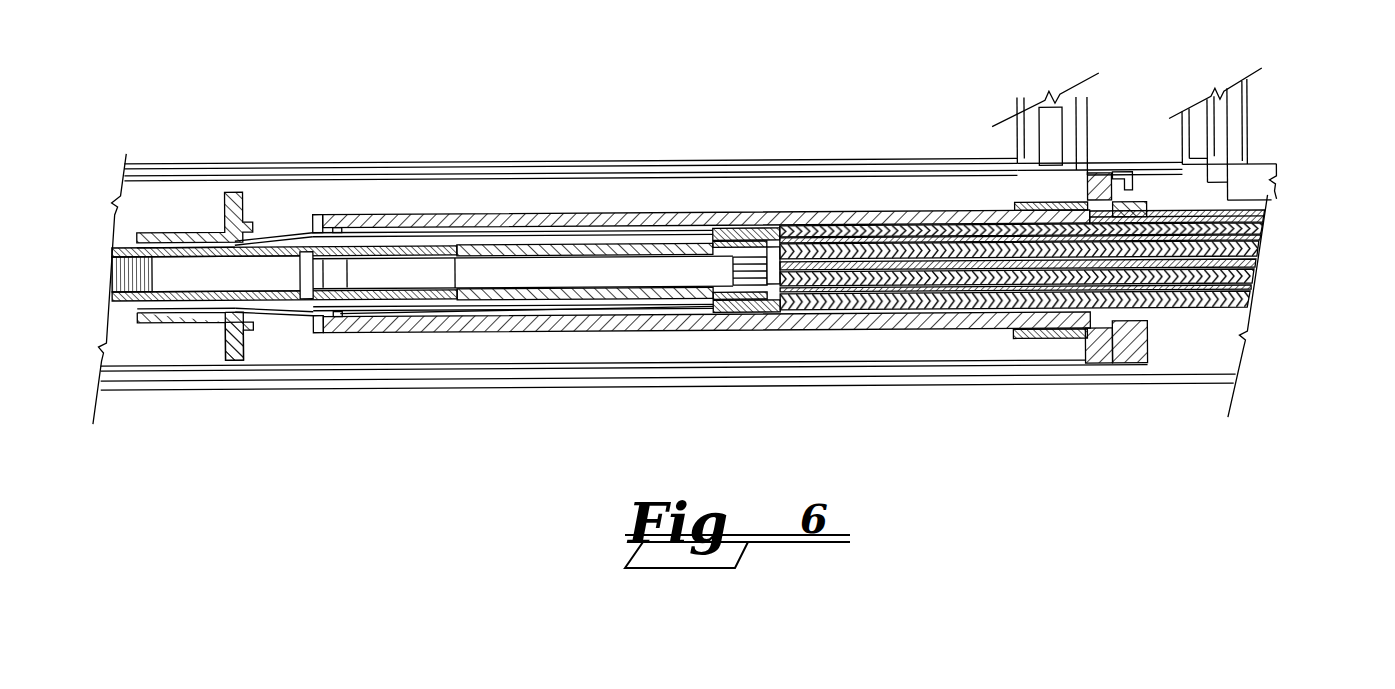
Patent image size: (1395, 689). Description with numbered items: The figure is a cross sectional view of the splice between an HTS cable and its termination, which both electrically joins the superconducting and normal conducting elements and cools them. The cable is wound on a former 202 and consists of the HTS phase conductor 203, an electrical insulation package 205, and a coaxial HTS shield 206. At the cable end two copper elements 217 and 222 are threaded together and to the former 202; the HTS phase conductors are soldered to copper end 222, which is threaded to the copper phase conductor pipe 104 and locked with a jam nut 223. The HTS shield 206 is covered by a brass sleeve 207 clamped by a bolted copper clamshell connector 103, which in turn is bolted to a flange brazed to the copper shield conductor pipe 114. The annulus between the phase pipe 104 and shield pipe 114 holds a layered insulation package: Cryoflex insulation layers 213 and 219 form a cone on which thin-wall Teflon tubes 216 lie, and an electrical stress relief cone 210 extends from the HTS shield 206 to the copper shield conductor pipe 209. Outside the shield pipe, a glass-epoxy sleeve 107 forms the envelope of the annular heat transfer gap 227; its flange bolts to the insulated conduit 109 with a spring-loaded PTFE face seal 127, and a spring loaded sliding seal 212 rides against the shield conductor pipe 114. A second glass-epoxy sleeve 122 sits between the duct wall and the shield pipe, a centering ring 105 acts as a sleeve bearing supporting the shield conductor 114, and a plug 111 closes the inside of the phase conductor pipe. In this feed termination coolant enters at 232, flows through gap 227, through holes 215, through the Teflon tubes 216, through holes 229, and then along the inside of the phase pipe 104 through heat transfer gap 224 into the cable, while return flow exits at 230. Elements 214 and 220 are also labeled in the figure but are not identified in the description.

The bolted copper clamshell connector 103 is at (217, 230).
The copper phase conductor pipe 104 is at (1262, 258).
The centering ring 105 is at (320, 208).
The G-10 sleeve 107 is at (697, 244).
The insulated conduit 109 is at (1252, 164).
The plug 111 is at (1262, 259).
The copper shield conductor pipe 114 is at (1263, 241).
The G-10 sleeve 122 is at (1268, 221).
The spring-loaded PTFE face seal 127 is at (1127, 163).
The former 202 is at (117, 240).
The HTS phase conductor 203 is at (113, 238).
The electrical insulation package 205 is at (160, 222).
The coaxial HTS shield 206 is at (193, 227).
The brass sleeve 207 is at (213, 225).
The copper shield conductor pipe 209 is at (293, 213).
The electrical stress relief cone 210 is at (283, 235).
The spring loaded sliding seal 212 is at (303, 235).
The Cryoflex insulation layers 213 is at (380, 212).
The inner tube 214 is at (412, 226).
The holes 215 is at (402, 229).
The thin-wall Teflon tubes 216 is at (473, 229).
The copper element 217 is at (493, 243).
The Cryoflex insulation 219 is at (600, 240).
The hatched tube section 220 is at (640, 210).
The copper end 222 is at (715, 234).
The jam nut 223 is at (747, 248).
The heat transfer gap 224 is at (847, 218).
The annular heat transfer gap 227 is at (867, 240).
The holes 229 is at (940, 234).
The coolant exit 230 is at (1050, 123).
The coolant inlet 232 is at (1218, 161).